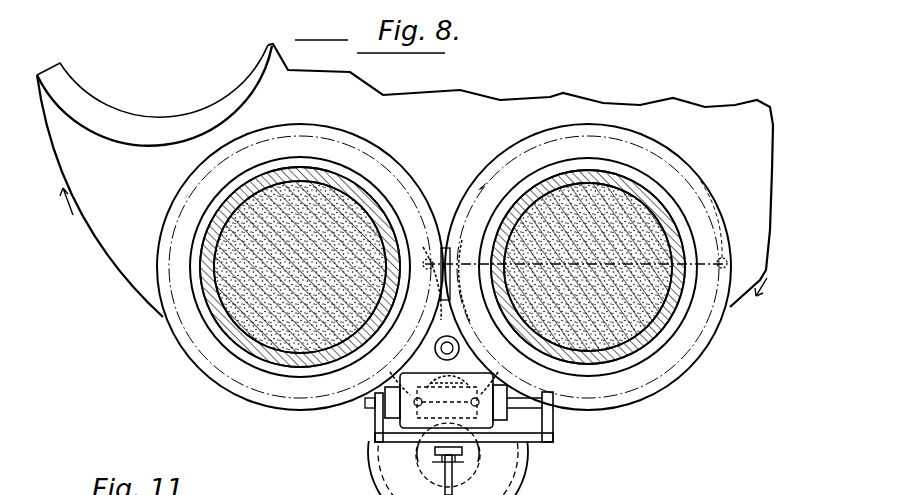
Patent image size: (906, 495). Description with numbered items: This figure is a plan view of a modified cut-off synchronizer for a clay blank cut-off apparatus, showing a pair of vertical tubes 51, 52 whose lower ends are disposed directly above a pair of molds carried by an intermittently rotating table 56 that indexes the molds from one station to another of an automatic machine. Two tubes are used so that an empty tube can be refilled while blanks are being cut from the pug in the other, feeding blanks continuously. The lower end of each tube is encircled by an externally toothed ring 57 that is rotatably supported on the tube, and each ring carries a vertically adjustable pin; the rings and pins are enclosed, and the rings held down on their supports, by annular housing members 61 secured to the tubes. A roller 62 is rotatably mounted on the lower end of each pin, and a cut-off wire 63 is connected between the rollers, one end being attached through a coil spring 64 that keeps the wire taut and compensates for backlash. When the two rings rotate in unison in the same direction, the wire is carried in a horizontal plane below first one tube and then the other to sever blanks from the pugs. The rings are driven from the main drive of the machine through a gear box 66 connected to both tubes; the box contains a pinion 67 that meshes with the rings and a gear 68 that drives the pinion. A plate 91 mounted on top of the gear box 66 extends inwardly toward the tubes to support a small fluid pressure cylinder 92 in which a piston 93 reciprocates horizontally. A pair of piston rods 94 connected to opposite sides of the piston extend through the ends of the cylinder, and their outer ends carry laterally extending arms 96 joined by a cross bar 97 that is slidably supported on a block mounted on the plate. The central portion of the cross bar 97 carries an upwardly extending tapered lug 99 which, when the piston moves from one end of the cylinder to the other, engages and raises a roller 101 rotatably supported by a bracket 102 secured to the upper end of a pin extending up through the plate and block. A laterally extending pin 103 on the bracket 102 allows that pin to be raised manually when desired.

The vertical tube 51 is at (222, 317).
The vertical tube 52 is at (685, 312).
The intermittently rotating table 56 is at (105, 228).
The externally toothed ring 57 is at (230, 388).
The annular housing member 61 is at (197, 368).
The roller 62 is at (450, 249).
The cut-off wire 63 is at (681, 266).
The coil spring 64 is at (715, 240).
The gear box 66 is at (371, 471).
The pinion 67 is at (433, 310).
The gear 68 is at (530, 470).
The plate 91 is at (460, 474).
The fluid pressure cylinder 92 is at (472, 372).
The piston 93 is at (494, 380).
The piston rods 94 is at (395, 385).
The laterally extending arms 96 is at (378, 426).
The cross bar 97 is at (545, 437).
The tapered lug 99 is at (473, 443).
The roller 101 is at (437, 448).
The bracket 102 is at (443, 461).
The laterally extending pin 103 is at (447, 472).